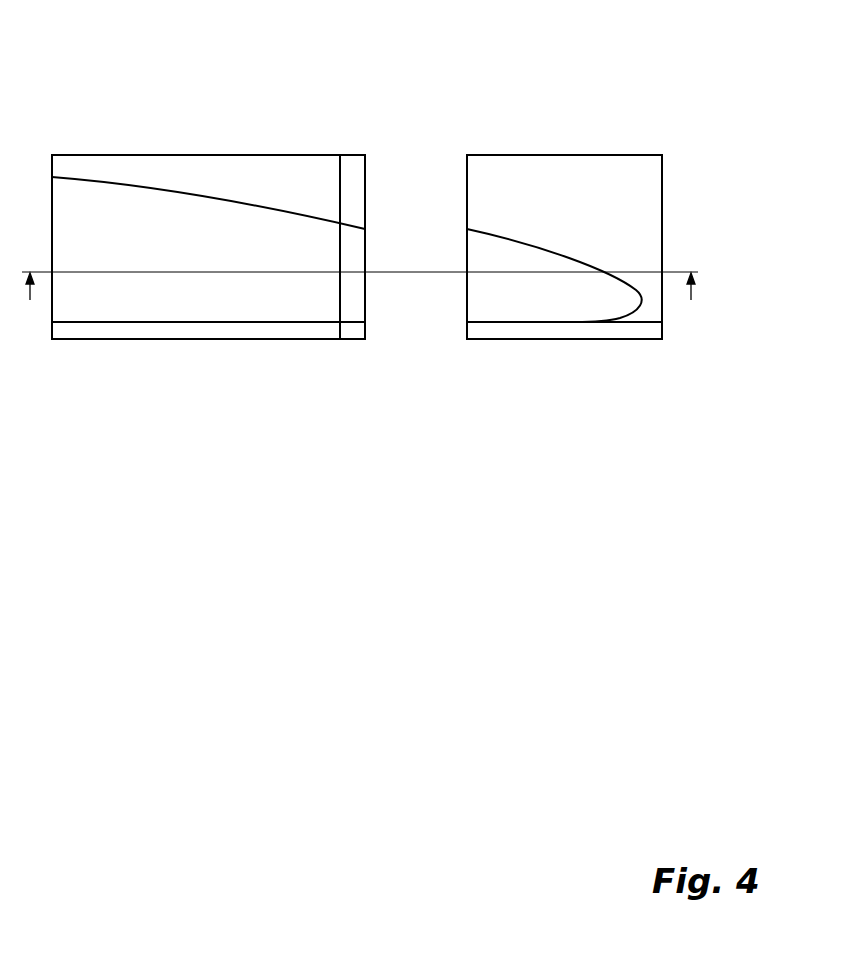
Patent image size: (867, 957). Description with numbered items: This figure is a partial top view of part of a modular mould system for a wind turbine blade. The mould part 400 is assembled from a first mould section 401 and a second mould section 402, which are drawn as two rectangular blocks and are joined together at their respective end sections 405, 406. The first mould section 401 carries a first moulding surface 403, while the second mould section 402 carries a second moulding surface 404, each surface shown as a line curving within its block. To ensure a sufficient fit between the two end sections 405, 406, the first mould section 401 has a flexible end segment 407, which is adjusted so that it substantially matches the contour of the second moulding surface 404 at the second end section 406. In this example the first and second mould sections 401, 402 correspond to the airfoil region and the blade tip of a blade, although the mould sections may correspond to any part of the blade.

The mould part 400 is at (392, 200).
The first mould section 401 is at (295, 156).
The second mould section 402 is at (523, 158).
The first moulding surface 403 is at (293, 305).
The second moulding surface 404 is at (558, 305).
The end section 405 is at (367, 323).
The end section 406 is at (467, 172).
The end segment 407 is at (353, 248).